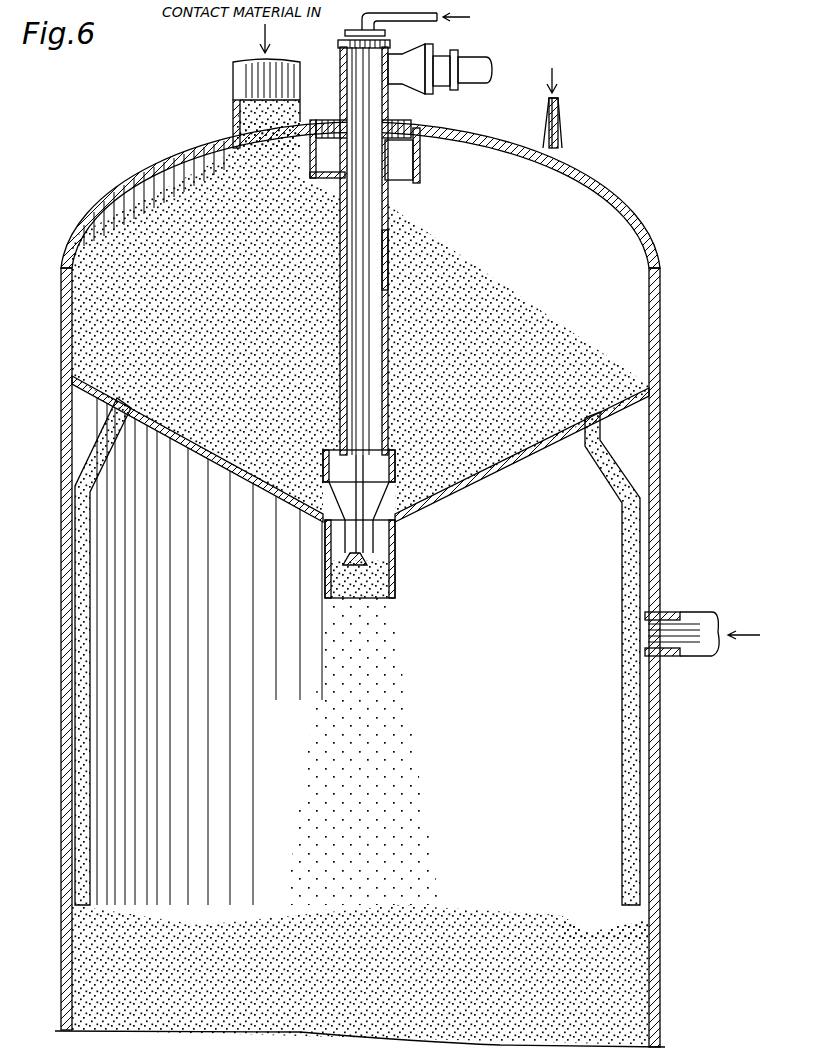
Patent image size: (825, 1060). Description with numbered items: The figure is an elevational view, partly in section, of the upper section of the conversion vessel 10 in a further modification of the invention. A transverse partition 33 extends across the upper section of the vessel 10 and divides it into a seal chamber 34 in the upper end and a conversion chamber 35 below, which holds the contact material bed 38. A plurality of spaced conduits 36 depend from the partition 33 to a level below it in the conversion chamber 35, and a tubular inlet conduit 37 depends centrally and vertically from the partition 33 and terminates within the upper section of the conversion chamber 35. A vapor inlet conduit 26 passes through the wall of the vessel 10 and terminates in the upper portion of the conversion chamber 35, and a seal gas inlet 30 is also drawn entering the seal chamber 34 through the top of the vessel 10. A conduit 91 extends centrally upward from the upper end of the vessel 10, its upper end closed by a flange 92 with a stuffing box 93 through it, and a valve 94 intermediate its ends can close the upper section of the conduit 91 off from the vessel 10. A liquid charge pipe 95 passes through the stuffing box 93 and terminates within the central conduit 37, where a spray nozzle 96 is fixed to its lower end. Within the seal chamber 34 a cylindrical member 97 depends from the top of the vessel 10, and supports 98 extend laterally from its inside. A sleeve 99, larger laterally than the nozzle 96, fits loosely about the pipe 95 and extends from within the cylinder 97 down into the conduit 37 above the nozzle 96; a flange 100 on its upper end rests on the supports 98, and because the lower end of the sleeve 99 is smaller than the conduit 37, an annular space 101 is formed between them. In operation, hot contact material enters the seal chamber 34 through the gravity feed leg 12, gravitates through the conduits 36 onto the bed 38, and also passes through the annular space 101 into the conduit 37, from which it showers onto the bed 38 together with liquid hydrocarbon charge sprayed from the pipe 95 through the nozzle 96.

The conversion vessel 10 is at (655, 482).
The gravity feed leg 12 is at (233, 78).
The vapor inlet conduit 26 is at (694, 612).
The seal gas inlet 30 is at (561, 114).
The partition 33 is at (515, 456).
The seal chamber 34 is at (626, 222).
The conversion chamber 35 is at (615, 988).
The spaced conduits 36 is at (76, 598).
The tubular inlet conduit 37 is at (396, 589).
The contact material bed 38 is at (583, 932).
The conduit 91 is at (343, 88).
The flange 92 is at (340, 46).
The stuffing box 93 is at (345, 33).
The valve 94 is at (424, 92).
The liquid charge pipe 95 is at (434, 24).
The spray nozzle 96 is at (368, 561).
The cylindrical member 97 is at (420, 183).
The supports 98 is at (414, 160).
The sleeve 99 is at (390, 243).
The flange 100 is at (410, 135).
The annular space 101 is at (392, 528).